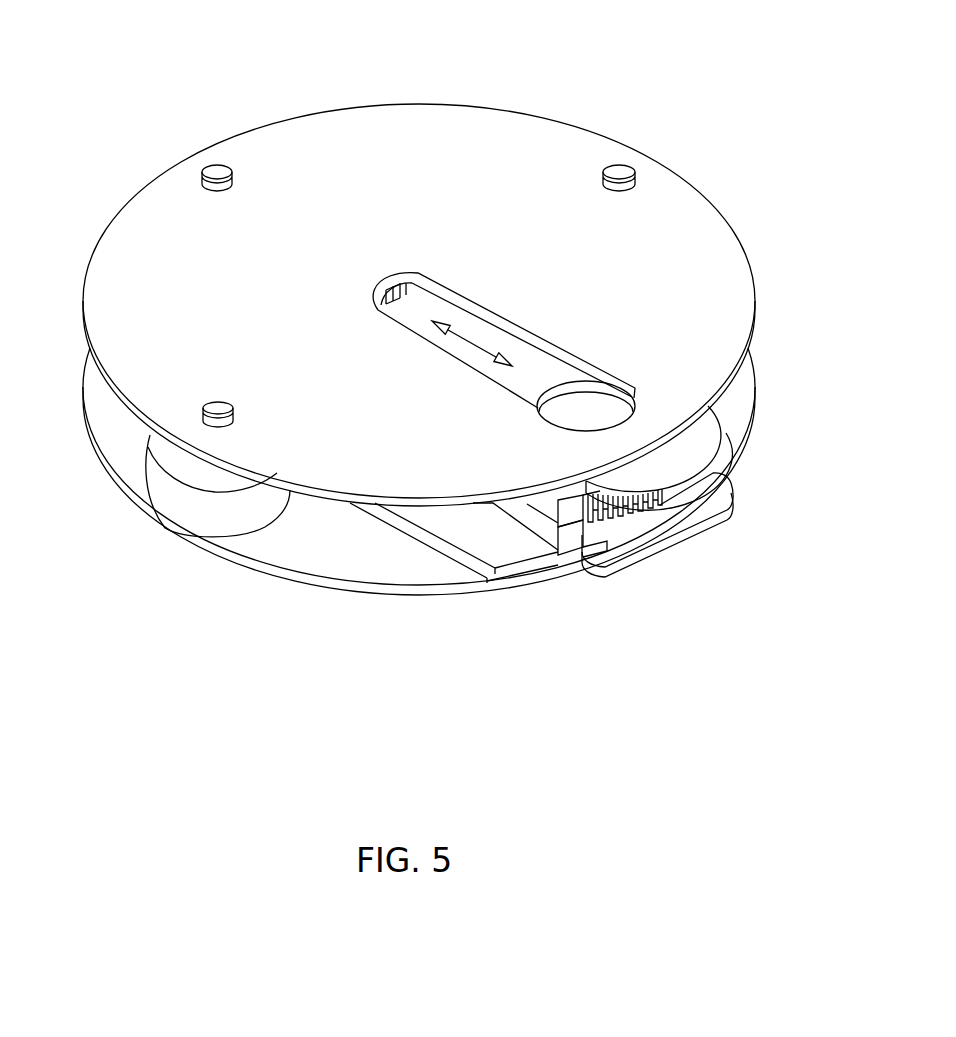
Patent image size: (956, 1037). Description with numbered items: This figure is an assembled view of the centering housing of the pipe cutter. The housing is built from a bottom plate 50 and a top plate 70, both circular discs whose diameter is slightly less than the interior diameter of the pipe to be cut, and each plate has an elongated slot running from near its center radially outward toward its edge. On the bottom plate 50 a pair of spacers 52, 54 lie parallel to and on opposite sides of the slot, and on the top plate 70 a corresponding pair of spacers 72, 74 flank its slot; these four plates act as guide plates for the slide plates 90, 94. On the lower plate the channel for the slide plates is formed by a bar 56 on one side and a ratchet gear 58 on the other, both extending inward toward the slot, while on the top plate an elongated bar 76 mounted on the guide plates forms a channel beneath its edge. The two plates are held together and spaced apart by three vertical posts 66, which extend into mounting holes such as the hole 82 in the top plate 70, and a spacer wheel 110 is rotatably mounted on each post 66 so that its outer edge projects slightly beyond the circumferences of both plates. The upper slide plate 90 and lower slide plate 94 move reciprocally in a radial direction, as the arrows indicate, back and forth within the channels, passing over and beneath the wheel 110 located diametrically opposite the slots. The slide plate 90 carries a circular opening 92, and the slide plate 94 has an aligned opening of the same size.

The bottom plate 50 is at (280, 555).
The spacer 52 is at (513, 558).
The spacer 54 is at (733, 428).
The bar 56 is at (572, 547).
The ratchet gear 58 is at (381, 293).
The vertical post 66 is at (222, 406).
The top plate 70 is at (430, 127).
The spacer 72 is at (493, 526).
The spacer 74 is at (745, 377).
The elongated bar 76 is at (572, 506).
The mounting hole 82 is at (233, 413).
The slide plate 90 is at (474, 315).
The circular opening 92 is at (588, 398).
The slide plate 94 is at (637, 540).
The spacer wheel 110 is at (162, 516).